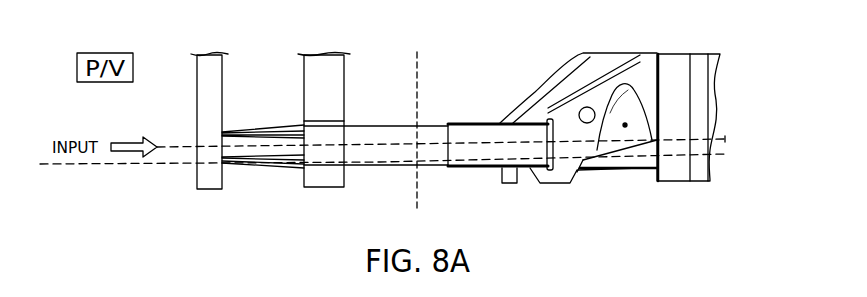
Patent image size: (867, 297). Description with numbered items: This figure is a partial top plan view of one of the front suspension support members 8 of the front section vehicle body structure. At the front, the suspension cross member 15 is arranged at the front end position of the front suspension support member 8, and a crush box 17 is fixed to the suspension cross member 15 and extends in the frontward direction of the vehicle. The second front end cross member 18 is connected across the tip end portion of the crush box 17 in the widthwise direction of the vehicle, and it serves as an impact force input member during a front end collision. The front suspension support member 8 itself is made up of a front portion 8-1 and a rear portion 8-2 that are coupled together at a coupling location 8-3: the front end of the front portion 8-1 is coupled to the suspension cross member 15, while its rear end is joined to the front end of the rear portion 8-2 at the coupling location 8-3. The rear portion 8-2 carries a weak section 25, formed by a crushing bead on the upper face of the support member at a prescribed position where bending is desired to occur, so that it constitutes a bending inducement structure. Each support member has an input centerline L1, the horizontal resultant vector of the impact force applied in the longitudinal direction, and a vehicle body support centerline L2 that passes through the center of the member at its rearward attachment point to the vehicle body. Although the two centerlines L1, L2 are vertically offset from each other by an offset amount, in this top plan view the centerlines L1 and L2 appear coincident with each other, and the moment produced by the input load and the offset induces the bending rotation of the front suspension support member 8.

The second front end cross member 18 is at (220, 100).
The crush boxes 17 is at (258, 128).
The suspension cross member 15 is at (345, 78).
The front suspension support member 8 is at (483, 170).
The front portion 8-1 is at (375, 167).
The rear portion 8-2 is at (587, 177).
The coupling location 8-3 is at (500, 133).
The weak section 25 is at (625, 127).
The input centerline L1 is at (187, 147).
The vehicle body support centerline L2 is at (727, 142).